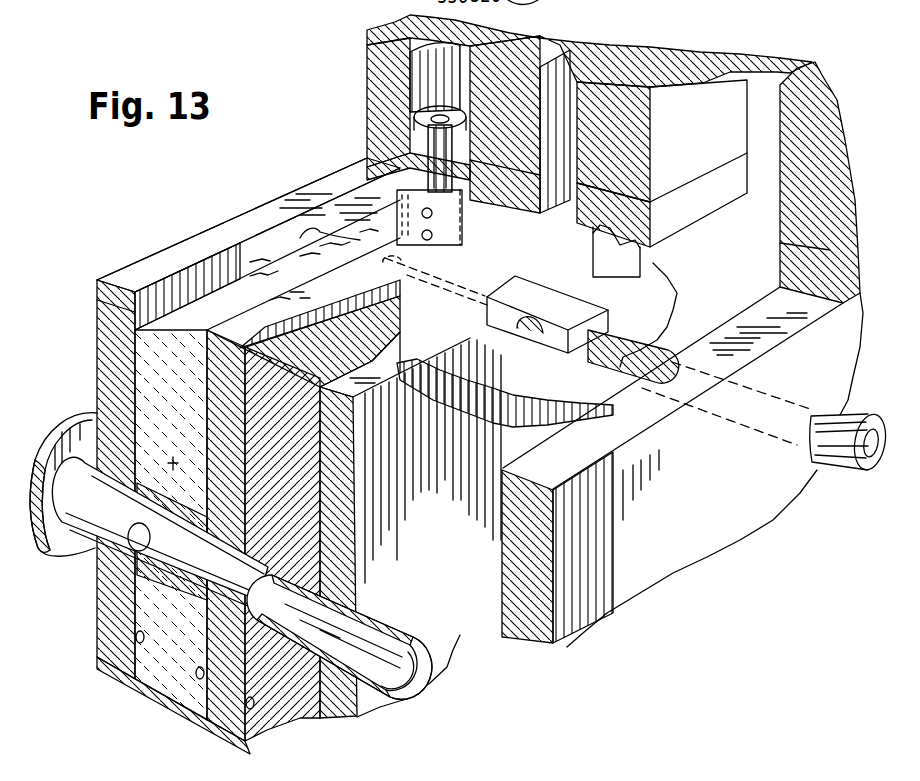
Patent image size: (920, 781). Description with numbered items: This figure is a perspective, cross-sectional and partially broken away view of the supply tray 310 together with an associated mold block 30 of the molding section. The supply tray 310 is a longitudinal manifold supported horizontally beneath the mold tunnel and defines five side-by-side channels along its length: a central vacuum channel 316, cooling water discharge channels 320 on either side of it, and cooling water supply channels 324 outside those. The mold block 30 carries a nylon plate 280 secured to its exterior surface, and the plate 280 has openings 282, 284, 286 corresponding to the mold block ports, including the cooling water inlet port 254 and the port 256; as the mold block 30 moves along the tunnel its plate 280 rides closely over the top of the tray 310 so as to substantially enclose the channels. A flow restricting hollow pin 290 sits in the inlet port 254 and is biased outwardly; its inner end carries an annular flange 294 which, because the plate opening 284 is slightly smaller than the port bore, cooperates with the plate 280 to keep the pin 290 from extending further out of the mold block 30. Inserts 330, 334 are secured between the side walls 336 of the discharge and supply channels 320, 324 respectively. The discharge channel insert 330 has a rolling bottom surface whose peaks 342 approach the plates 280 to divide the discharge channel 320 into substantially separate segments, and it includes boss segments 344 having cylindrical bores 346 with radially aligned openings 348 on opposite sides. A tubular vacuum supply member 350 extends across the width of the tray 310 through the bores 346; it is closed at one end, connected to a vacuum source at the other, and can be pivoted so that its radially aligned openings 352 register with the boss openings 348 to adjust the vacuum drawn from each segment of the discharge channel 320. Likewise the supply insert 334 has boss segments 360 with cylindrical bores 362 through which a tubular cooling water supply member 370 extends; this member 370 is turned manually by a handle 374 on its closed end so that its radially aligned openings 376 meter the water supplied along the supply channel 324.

The mold block 30 is at (365, 38).
The cooling water inlet port 254 is at (366, 65).
The port 256 is at (567, 172).
The plate 280 is at (367, 128).
The plate opening 282 is at (720, 188).
The plate opening 284 is at (395, 170).
The plate opening 286 is at (580, 172).
The flow restricting hollow pin 290 is at (372, 147).
The annular flange 294 is at (460, 117).
The supply tray 310 is at (140, 250).
The central vacuum channel 316 is at (501, 615).
The cooling water discharge channel 320 is at (228, 330).
The cooling water supply channel 324 is at (290, 360).
The discharge channel insert 330 is at (296, 464).
The cooling water supply insert 334 is at (156, 482).
The side wall 336 is at (128, 272).
The peak 342 is at (213, 283).
The boss segment 344 is at (338, 328).
The cylindrical bore 346 is at (618, 378).
The radially aligned opening 348 is at (497, 332).
The tubular vacuum supply member 350 is at (700, 322).
The radially aligned opening 352 is at (528, 324).
The boss segment 360 is at (97, 366).
The cylindrical bore 362 is at (197, 567).
The tubular cooling water supply member 370 is at (477, 573).
The handle 374 is at (82, 422).
The radially aligned opening 376 is at (150, 540).